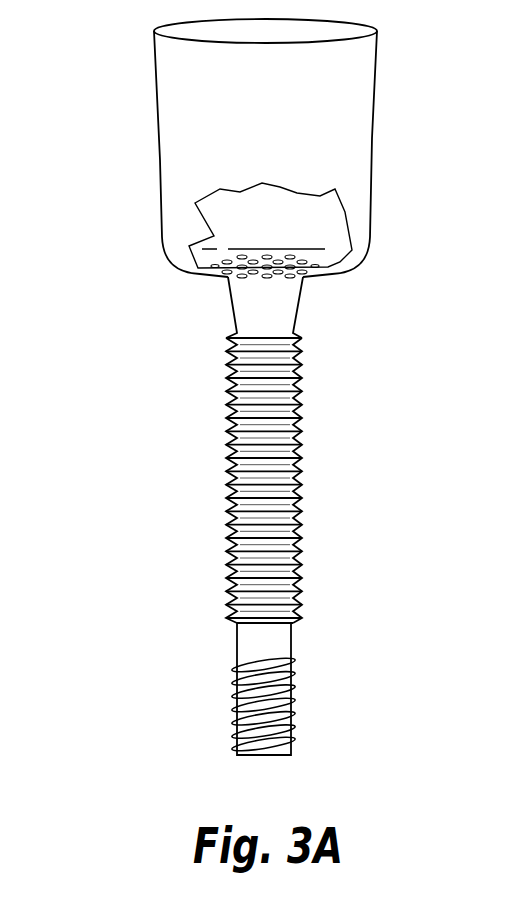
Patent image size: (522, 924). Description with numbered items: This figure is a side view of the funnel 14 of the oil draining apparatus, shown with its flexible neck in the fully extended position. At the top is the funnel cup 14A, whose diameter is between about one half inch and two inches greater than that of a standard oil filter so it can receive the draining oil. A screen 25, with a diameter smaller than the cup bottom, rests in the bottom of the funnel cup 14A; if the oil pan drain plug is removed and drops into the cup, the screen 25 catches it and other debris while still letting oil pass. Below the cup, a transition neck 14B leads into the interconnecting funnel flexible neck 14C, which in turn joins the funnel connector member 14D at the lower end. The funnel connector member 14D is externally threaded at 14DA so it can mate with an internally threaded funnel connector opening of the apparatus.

The funnel 14 is at (118, 47).
The funnel cup 14A is at (372, 138).
The transition neck 14B is at (300, 305).
The funnel flexible neck 14C is at (302, 335).
The funnel connector member 14D is at (300, 642).
The external threads 14DA is at (233, 720).
The screen 25 is at (229, 276).